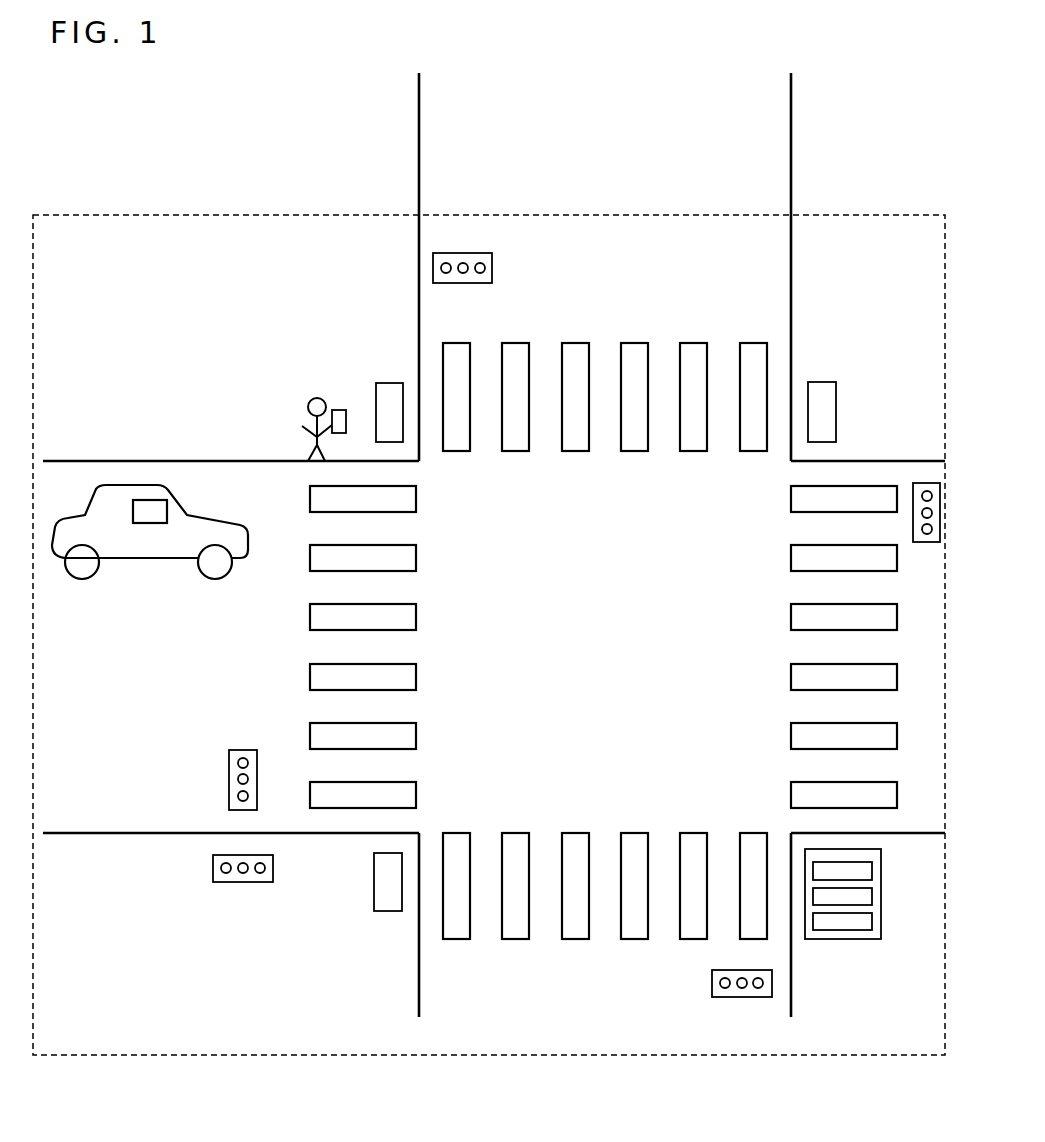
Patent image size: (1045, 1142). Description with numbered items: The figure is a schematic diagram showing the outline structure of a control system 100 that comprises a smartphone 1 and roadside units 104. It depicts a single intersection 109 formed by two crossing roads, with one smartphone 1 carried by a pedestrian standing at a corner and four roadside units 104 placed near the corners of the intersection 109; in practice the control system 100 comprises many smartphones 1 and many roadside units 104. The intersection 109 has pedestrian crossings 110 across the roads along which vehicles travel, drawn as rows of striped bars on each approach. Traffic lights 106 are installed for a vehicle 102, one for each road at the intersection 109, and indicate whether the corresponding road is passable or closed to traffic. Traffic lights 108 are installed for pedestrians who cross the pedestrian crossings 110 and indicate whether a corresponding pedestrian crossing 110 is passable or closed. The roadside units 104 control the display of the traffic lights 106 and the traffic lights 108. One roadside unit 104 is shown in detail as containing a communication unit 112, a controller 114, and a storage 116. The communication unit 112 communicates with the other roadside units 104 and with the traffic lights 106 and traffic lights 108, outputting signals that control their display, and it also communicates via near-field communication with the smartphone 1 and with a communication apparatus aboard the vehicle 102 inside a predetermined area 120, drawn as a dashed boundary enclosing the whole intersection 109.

The smartphone 1 is at (341, 408).
The control system 100 is at (261, 166).
The vehicle 102 is at (153, 562).
The roadside unit 104 is at (647, 661).
The traffic light 106 is at (927, 483).
The traffic light 108 is at (243, 882).
The intersection 109 is at (680, 284).
The pedestrian crossing 110 is at (417, 558).
The communication unit 112 is at (872, 868).
The controller 114 is at (872, 893).
The storage 116 is at (872, 918).
The predetermined area 120 is at (362, 214).